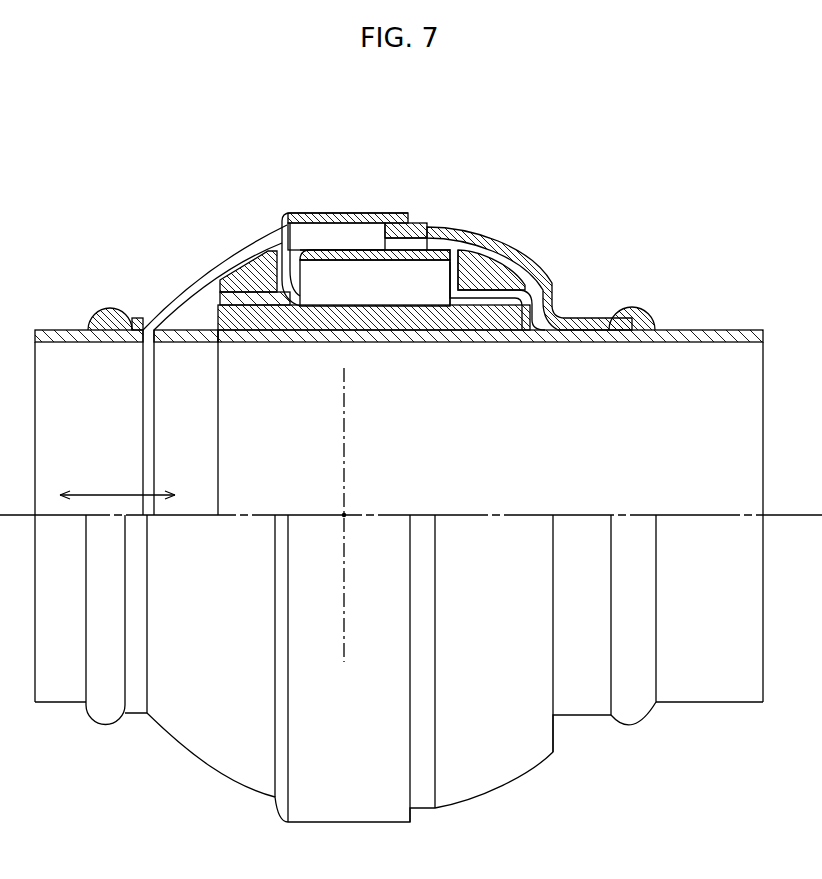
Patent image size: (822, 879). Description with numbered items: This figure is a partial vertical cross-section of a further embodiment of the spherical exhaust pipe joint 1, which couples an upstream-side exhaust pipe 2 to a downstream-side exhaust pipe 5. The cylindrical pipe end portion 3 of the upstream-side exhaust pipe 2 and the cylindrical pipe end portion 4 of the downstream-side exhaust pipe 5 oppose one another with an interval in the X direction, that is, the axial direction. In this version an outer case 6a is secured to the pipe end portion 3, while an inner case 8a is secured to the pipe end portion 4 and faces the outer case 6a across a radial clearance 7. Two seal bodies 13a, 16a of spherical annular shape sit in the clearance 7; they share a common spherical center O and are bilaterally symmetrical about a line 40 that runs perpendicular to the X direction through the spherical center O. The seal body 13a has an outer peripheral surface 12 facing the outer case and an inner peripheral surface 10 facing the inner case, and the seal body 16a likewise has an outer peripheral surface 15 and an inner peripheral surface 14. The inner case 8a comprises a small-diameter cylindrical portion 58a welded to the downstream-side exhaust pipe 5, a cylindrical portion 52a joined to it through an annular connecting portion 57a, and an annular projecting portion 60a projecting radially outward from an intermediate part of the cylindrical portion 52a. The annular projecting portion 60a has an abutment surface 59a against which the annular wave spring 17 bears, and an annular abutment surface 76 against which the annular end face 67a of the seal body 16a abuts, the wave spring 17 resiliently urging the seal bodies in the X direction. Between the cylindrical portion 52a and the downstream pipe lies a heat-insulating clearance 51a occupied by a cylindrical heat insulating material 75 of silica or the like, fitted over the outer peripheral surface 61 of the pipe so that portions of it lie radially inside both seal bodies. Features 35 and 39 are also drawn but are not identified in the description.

The spherical exhaust pipe joint 1 is at (280, 214).
The upstream-side exhaust pipe 2 is at (45, 337).
The cylindrical pipe end portion 3 is at (142, 386).
The cylindrical pipe end portion 4 is at (218, 421).
The downstream-side exhaust pipe 5 is at (735, 330).
The outer case 6a is at (158, 318).
The clearance 7 is at (335, 236).
The inner case 8a is at (418, 228).
The inner peripheral surface 10 is at (218, 322).
The outer peripheral surface 12 is at (225, 258).
The seal body 13a is at (238, 258).
The inner peripheral surface 14 is at (515, 310).
The outer peripheral surface 15 is at (554, 272).
The seal body 16a is at (518, 272).
The wave spring 17 is at (290, 292).
The arc portion 35 is at (500, 262).
The gap 39 is at (258, 268).
The line 40 is at (344, 470).
The heat-insulating clearance 51a is at (372, 286).
The cylindrical portion 52a is at (248, 306).
The annular connecting portion 57a is at (572, 332).
The small-diameter cylindrical portion 58a is at (604, 318).
The abutment surface 59a is at (286, 250).
The annular projecting portion 60a is at (412, 268).
The outer peripheral surface 61 is at (84, 330).
The annular end face 67a is at (470, 250).
The heat insulating material 75 is at (325, 336).
The annular abutment surface 76 is at (478, 288).
The spherical center O is at (344, 515).
The X direction X is at (118, 495).